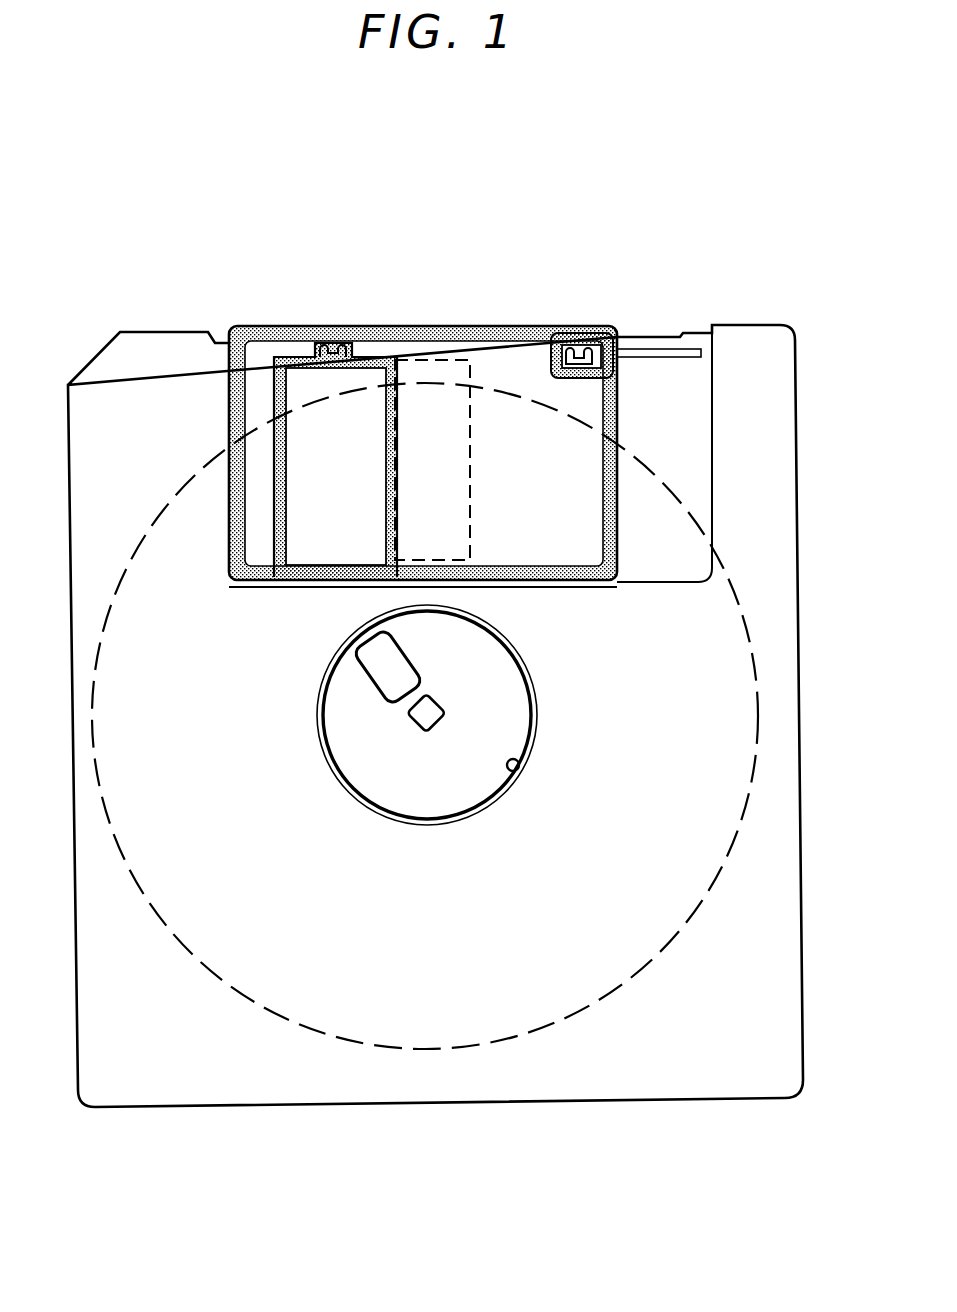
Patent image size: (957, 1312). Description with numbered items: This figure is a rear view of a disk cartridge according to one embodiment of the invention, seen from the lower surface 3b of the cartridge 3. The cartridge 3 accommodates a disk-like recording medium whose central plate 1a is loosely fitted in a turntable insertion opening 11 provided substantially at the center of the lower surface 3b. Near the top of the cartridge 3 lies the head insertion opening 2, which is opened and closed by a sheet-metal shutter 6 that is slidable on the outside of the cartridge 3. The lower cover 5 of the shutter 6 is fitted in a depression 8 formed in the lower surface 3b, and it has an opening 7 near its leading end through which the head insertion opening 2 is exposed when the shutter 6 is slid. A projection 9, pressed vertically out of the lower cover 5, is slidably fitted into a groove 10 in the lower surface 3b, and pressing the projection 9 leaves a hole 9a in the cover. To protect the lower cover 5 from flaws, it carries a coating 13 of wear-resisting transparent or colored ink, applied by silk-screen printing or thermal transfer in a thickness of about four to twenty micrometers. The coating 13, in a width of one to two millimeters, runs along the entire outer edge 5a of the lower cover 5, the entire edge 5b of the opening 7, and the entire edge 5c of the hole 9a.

The central plate 1a is at (507, 720).
The head insertion opening 2 is at (463, 500).
The cartridge 3 is at (770, 1125).
The lower surface 3b is at (758, 942).
The lower cover 5 is at (578, 521).
The outer edge 5a is at (237, 410).
The edge of opening 5b is at (278, 541).
The edge of hole 5c is at (570, 378).
The shutter 6 is at (268, 318).
The opening 7 is at (321, 572).
The depression 8 is at (683, 578).
The projection 9 is at (334, 354).
The hole 9a is at (575, 348).
The groove 10 is at (655, 356).
The turntable insertion opening 11 is at (518, 770).
The coating 13 is at (553, 365).